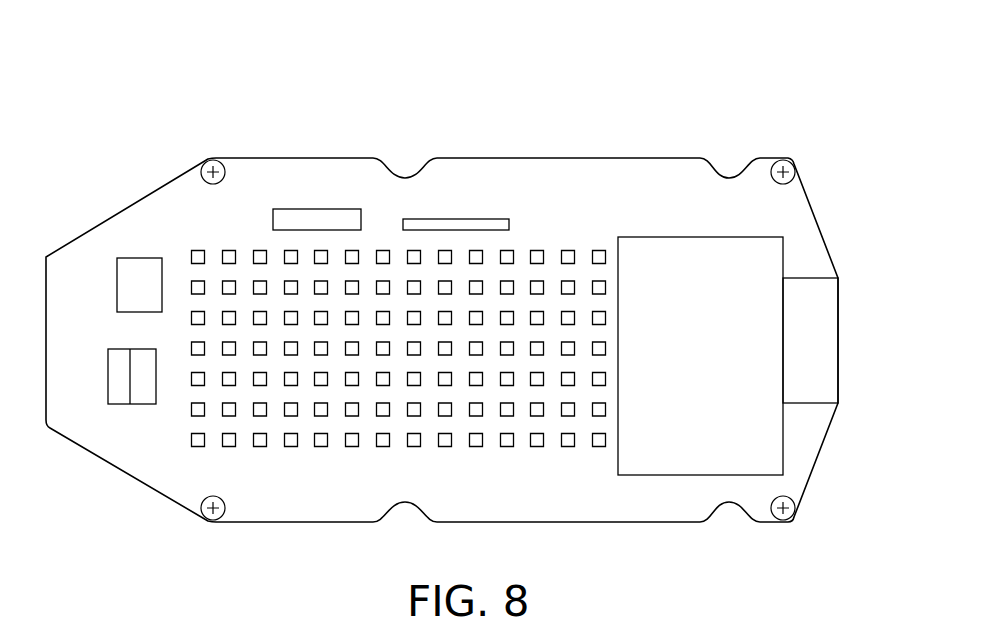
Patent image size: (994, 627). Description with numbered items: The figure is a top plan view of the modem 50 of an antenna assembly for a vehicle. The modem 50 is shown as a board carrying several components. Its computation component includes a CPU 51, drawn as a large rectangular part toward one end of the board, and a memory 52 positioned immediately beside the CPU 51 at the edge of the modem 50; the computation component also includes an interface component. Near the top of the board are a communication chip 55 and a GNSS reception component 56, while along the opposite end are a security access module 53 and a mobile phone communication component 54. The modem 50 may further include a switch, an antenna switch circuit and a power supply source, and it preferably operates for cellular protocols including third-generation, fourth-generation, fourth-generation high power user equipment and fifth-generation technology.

The modem 50 is at (722, 107).
The CPU 51 is at (773, 248).
The memory 52 is at (830, 310).
The security access module 53 is at (130, 258).
The mobile phone communication component 54 is at (138, 404).
The communication chip 55 is at (308, 209).
The GNSS reception component 56 is at (482, 219).